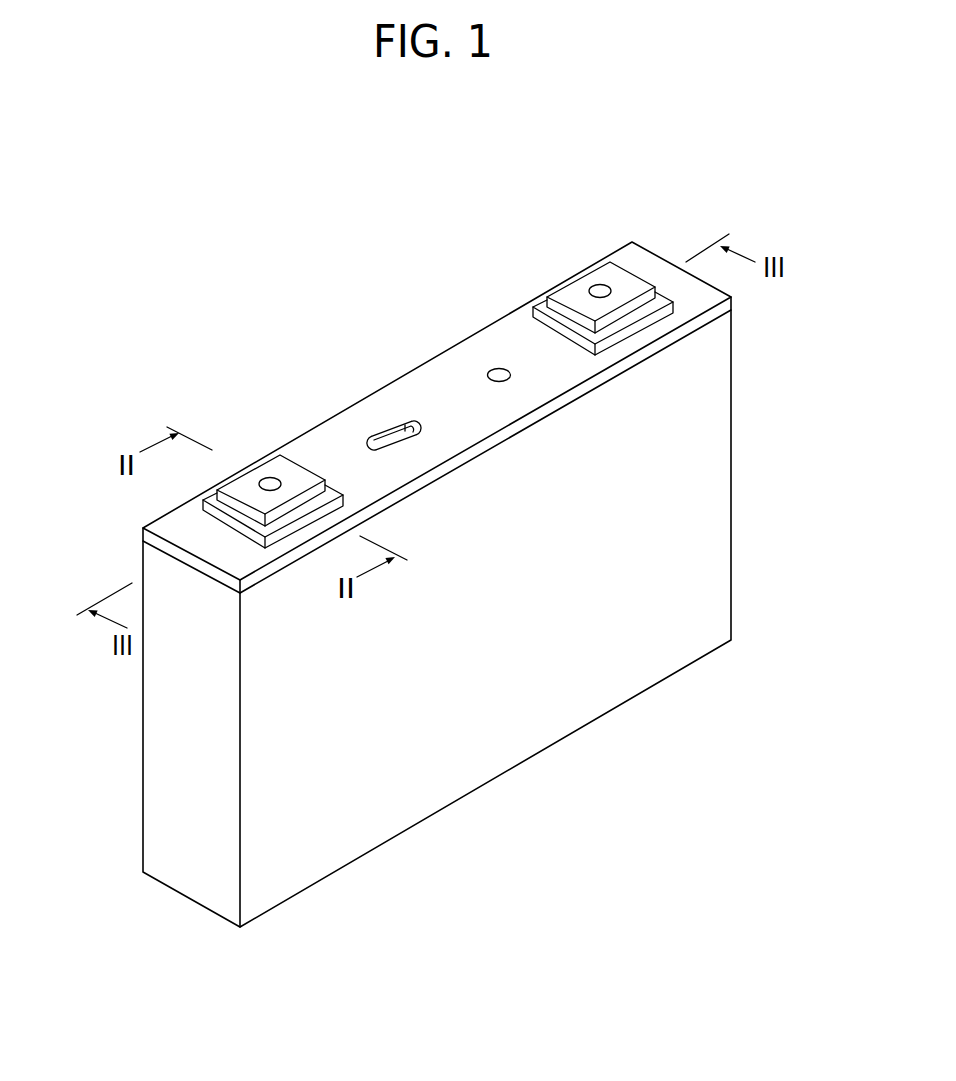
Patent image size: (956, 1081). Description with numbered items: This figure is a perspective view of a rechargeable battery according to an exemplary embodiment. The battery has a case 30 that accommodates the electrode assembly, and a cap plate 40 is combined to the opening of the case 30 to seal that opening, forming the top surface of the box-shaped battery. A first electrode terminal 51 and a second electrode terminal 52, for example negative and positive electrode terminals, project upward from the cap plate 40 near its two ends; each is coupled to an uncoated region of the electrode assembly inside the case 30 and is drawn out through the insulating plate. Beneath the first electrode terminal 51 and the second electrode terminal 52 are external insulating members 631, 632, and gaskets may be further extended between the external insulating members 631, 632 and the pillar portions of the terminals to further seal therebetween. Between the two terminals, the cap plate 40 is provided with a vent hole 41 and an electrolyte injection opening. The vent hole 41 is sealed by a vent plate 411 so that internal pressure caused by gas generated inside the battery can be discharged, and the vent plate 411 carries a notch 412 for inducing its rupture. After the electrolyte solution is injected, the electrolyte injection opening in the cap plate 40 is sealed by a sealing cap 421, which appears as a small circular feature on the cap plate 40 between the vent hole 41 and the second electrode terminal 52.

The case 30 is at (745, 517).
The cap plate 40 is at (442, 387).
The vent hole 41 is at (369, 441).
The vent plate 411 is at (379, 433).
The notch 412 is at (397, 427).
The sealing cap 421 is at (497, 368).
The first electrode terminal 51 is at (254, 458).
The second electrode terminal 52 is at (582, 268).
The external insulating member 631 is at (214, 514).
The external insulating member 632 is at (540, 318).